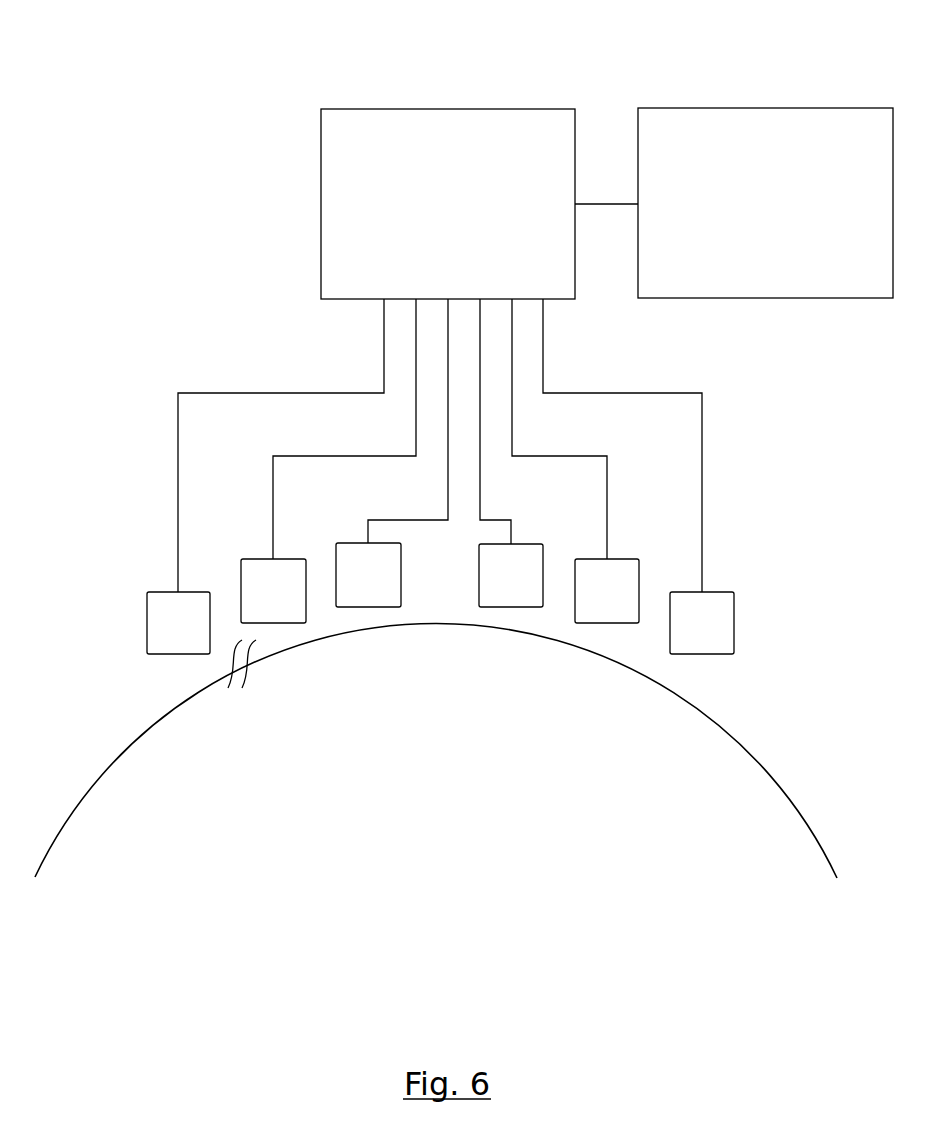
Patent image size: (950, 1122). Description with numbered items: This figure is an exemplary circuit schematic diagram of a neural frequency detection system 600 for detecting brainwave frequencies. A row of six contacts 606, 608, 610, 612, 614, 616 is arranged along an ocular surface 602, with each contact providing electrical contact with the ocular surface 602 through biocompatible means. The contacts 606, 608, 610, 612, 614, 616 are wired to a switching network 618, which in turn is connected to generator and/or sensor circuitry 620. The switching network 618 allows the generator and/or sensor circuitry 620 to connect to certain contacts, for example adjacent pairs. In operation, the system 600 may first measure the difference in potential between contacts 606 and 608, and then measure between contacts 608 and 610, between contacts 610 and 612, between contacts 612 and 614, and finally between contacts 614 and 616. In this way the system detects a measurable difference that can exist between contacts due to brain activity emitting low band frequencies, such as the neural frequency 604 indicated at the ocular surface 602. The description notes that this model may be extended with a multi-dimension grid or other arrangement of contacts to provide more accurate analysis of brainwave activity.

The neural frequency detection system 600 is at (376, 445).
The ocular surface 602 is at (436, 750).
The neural frequency 604 is at (238, 678).
The contact 606 is at (178, 623).
The contact 608 is at (273, 591).
The contact 610 is at (368, 575).
The contact 612 is at (511, 575).
The contact 614 is at (607, 591).
The contact 616 is at (702, 623).
The switching network 618 is at (448, 204).
The generator and/or sensor circuitry 620 is at (734, 203).